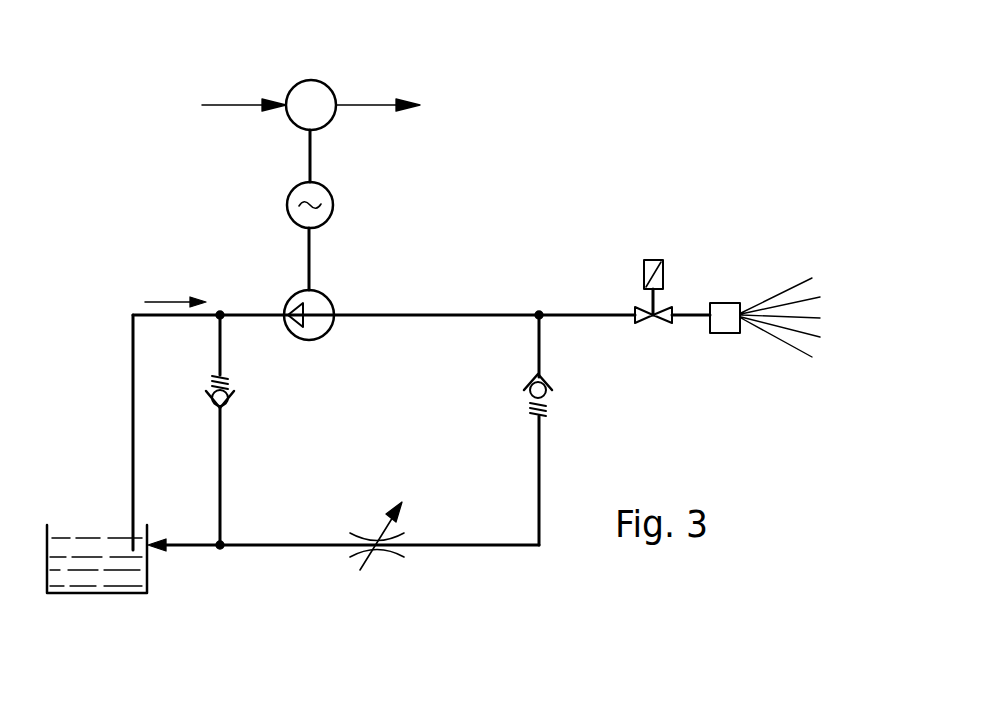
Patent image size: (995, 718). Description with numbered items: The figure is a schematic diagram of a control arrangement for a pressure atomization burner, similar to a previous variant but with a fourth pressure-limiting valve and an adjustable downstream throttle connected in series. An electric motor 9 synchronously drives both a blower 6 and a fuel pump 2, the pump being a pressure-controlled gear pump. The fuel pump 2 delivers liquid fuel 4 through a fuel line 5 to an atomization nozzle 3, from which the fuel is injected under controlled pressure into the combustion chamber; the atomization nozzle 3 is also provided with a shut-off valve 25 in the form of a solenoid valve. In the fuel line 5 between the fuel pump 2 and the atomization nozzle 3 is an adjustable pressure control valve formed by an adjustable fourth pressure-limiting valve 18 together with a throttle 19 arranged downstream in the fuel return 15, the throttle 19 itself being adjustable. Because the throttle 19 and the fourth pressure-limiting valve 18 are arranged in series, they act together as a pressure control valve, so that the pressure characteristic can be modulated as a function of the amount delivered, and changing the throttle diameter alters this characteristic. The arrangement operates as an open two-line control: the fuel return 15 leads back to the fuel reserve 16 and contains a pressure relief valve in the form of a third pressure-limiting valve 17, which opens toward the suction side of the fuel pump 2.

The fuel pump 2 is at (325, 327).
The atomization nozzle 3 is at (728, 303).
The liquid fuel 4 is at (810, 337).
The fuel line 5 is at (436, 315).
The blower 6 is at (315, 82).
The electric motor 9 is at (333, 207).
The fuel return 15 is at (276, 548).
The fuel reserve 16 is at (115, 578).
The third pressure-limiting valve 17 is at (229, 395).
The fourth pressure-limiting valve 18 is at (529, 389).
The throttle 19 is at (385, 555).
The shut-off valve 25 is at (653, 260).